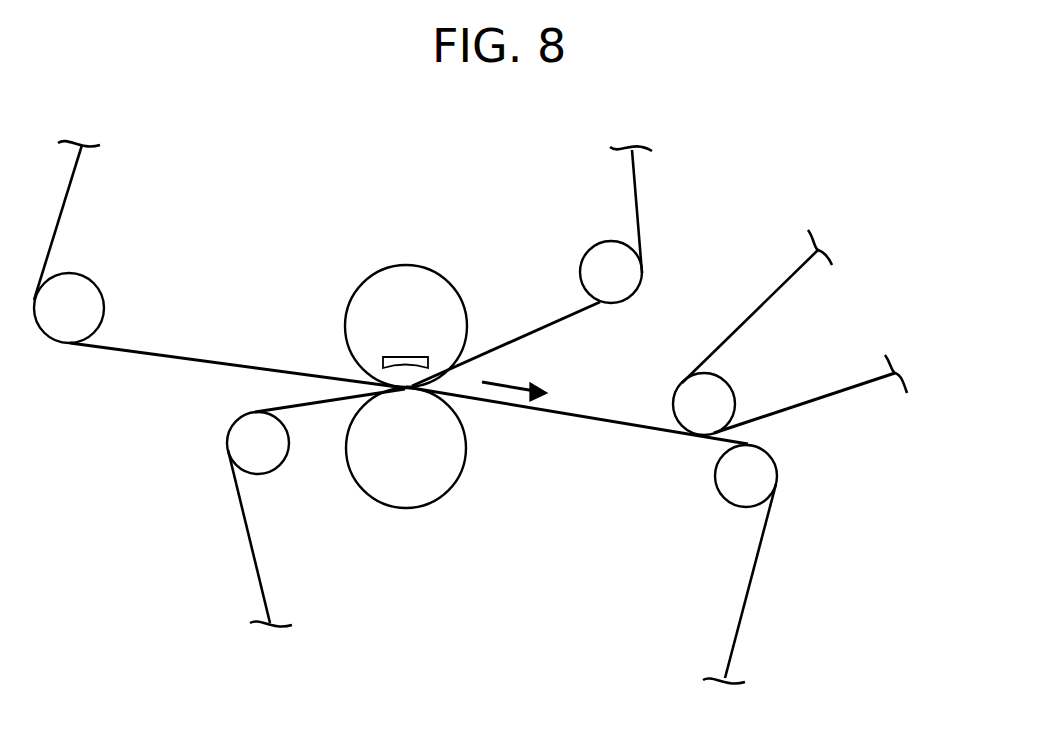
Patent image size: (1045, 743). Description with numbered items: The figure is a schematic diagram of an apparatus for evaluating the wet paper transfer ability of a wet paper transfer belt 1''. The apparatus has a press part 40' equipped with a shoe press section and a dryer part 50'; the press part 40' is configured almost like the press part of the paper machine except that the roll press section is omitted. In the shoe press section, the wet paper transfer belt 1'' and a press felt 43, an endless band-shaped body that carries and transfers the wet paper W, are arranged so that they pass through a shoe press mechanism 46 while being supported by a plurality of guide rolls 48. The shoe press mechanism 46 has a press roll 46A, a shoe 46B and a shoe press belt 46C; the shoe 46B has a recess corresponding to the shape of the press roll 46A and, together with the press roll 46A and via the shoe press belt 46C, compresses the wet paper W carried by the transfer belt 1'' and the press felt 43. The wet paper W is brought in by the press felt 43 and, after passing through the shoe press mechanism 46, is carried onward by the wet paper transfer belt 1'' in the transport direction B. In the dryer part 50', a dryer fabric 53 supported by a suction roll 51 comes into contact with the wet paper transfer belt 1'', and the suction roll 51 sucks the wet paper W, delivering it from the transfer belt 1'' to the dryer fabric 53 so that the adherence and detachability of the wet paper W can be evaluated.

The wet paper transfer belt 1'' is at (163, 395).
The press part 40' is at (736, 191).
The press felt 43 is at (636, 190).
The shoe press mechanism 46 is at (373, 387).
The press roll 46A is at (405, 510).
The shoe 46B is at (405, 357).
The shoe press belt 46C is at (410, 265).
The guide roll 48 is at (96, 290).
The dryer part 50' is at (805, 453).
The suction roll 51 is at (722, 378).
The dryer fabric 53 is at (767, 298).
The transport direction B is at (515, 385).
The wet paper W is at (218, 367).